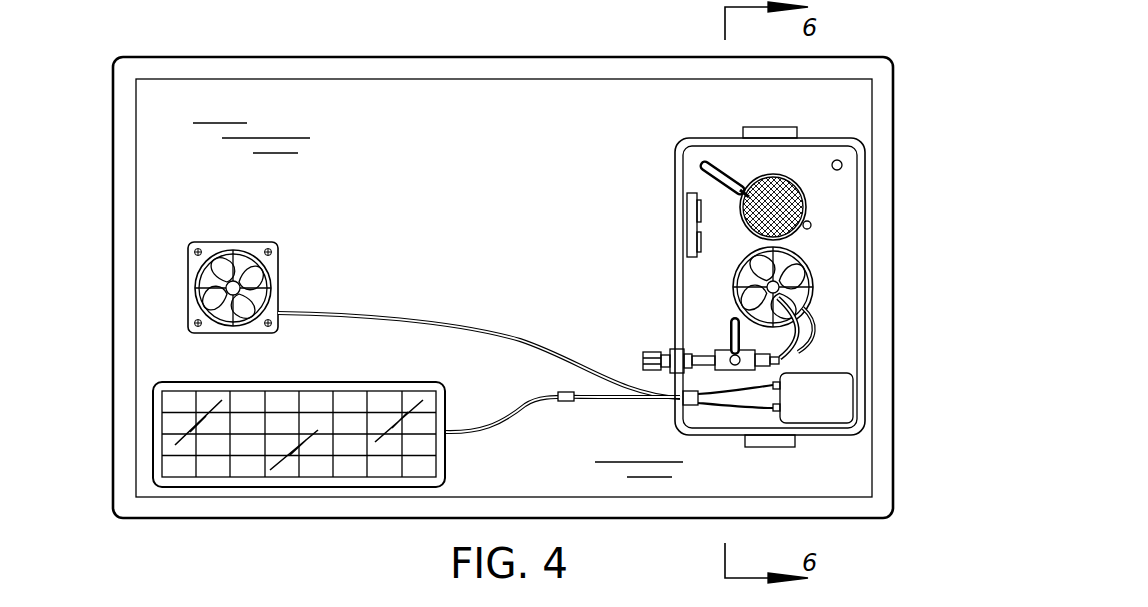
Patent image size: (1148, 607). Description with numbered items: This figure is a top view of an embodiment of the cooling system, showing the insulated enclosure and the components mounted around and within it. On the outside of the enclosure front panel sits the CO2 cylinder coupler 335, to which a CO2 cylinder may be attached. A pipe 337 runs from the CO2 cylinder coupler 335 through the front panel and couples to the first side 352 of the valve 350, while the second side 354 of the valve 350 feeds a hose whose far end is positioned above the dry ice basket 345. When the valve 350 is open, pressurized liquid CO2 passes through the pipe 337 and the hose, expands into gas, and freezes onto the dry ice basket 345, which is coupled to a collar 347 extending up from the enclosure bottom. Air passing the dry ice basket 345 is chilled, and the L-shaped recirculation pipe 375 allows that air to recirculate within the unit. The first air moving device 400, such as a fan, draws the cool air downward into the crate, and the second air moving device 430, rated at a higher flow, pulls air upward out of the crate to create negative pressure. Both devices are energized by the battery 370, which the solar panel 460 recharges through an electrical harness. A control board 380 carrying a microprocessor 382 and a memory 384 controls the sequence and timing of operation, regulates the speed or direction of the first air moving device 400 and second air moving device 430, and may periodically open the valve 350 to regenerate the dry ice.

The CO2 cylinder coupler 335 is at (648, 354).
The pipe 337 is at (700, 352).
The dry ice basket 345 is at (805, 212).
The collar 347 is at (808, 300).
The valve 350 is at (662, 388).
The first side of the valve 352 is at (708, 362).
The second side of the valve 354 is at (748, 366).
The battery 370 is at (838, 398).
The recirculation pipe 375 is at (839, 160).
The control board 380 is at (686, 197).
The microprocessor 382 is at (700, 212).
The memory 384 is at (773, 215).
The first air moving device 400 is at (797, 274).
The second air moving device 430 is at (200, 265).
The solar panel 460 is at (221, 470).